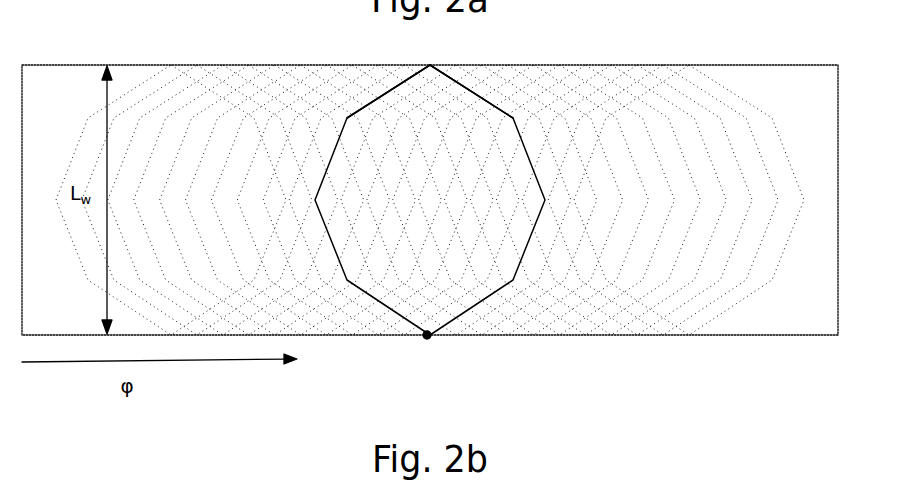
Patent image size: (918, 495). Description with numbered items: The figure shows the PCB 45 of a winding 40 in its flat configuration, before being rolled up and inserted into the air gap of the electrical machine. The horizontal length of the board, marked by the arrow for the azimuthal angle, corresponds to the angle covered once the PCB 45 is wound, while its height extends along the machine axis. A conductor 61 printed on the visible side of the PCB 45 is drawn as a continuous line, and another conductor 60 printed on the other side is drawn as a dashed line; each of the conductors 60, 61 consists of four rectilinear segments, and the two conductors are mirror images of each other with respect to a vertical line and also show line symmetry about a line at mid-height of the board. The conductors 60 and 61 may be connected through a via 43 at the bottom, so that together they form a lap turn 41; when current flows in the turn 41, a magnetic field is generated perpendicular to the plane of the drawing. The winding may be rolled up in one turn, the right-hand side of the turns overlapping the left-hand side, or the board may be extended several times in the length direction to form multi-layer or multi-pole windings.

The winding 40 is at (262, 115).
The lap turn 41 is at (530, 155).
The via 43 is at (427, 338).
The PCB 45 is at (805, 113).
The conductor 60 is at (366, 108).
The conductor 61 is at (488, 102).